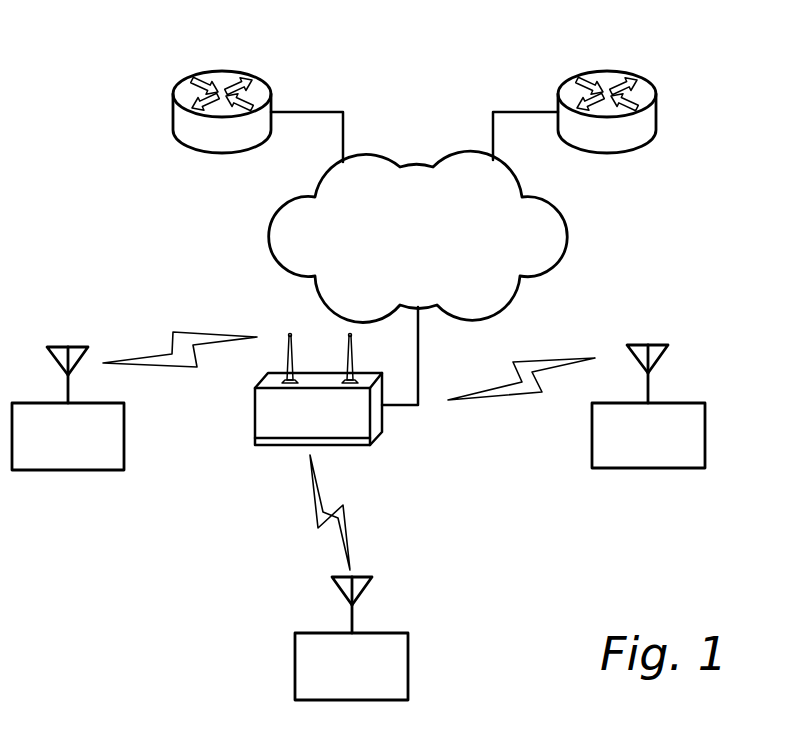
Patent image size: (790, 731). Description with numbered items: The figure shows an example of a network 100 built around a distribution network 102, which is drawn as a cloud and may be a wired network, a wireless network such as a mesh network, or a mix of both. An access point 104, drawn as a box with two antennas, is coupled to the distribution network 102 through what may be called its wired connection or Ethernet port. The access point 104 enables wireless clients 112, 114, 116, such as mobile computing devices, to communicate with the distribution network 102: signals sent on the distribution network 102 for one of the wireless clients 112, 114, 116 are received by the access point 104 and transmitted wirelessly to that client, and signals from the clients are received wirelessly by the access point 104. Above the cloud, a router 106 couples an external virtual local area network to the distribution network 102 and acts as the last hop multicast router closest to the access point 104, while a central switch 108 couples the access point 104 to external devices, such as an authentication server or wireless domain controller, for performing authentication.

The network 100 is at (97, 66).
The distribution network 102 is at (567, 262).
The access point 104 is at (255, 417).
The router 106 is at (173, 115).
The central switch 108 is at (656, 115).
The wireless client 112 is at (65, 471).
The wireless client 114 is at (408, 666).
The wireless client 116 is at (640, 469).